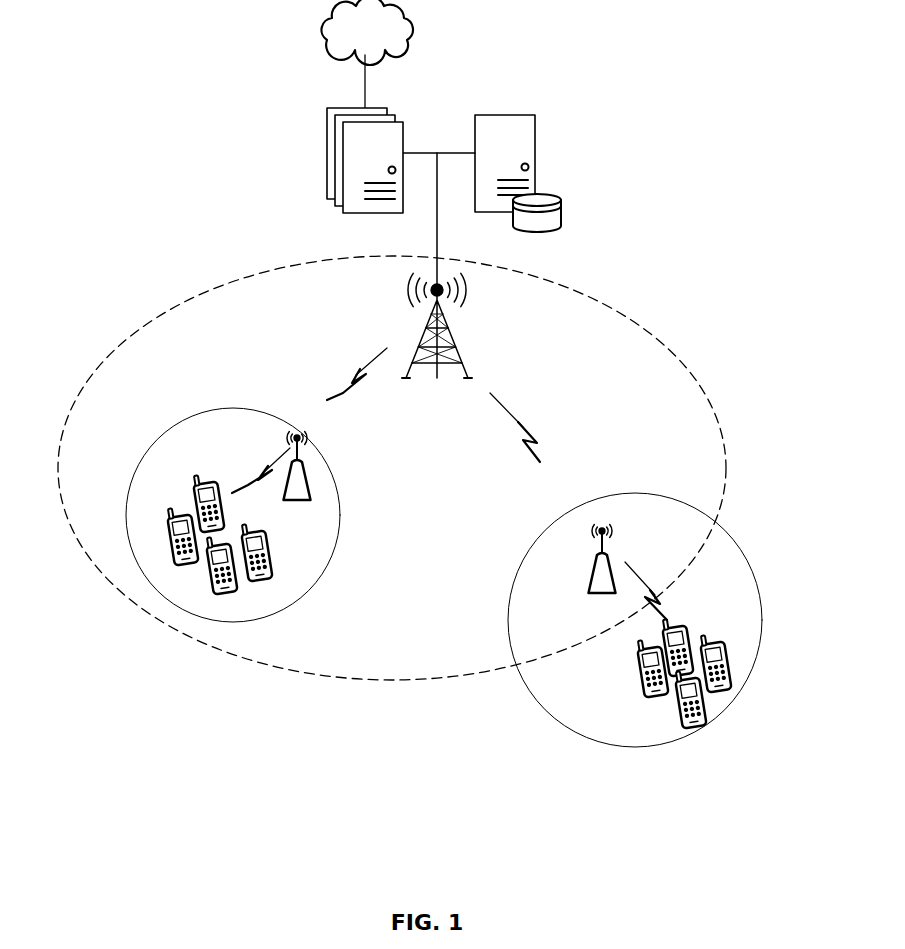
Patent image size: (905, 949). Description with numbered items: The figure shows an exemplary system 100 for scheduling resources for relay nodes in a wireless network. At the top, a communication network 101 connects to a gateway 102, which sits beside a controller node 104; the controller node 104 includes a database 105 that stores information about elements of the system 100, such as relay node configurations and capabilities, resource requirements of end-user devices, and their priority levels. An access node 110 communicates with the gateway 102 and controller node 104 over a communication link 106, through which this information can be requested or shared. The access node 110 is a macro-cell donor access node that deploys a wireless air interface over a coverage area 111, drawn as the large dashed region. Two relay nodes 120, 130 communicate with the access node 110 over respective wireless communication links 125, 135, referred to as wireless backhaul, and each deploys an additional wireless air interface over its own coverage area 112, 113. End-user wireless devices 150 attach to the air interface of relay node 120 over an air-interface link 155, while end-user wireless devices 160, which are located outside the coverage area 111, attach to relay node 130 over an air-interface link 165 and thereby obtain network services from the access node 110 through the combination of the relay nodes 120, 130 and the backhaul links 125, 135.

The system 100 is at (467, 57).
The communication network 101 is at (352, 34).
The gateway 102 is at (328, 108).
The controller node 104 is at (535, 115).
The database 105 is at (563, 195).
The communication link 106 is at (437, 230).
The access node 110 is at (423, 338).
The coverage area 111 is at (313, 678).
The coverage area 112 is at (142, 460).
The coverage area 113 is at (755, 662).
The relay node 120 is at (310, 470).
The wireless communication link 125 is at (357, 373).
The relay node 130 is at (610, 558).
The wireless communication link 135 is at (523, 427).
The end-user wireless devices 150 is at (272, 582).
The wireless link between first access point and user equipment 155 is at (270, 463).
The end-user wireless devices 160 is at (643, 710).
The wireless link between second access point and user equipment 165 is at (660, 612).